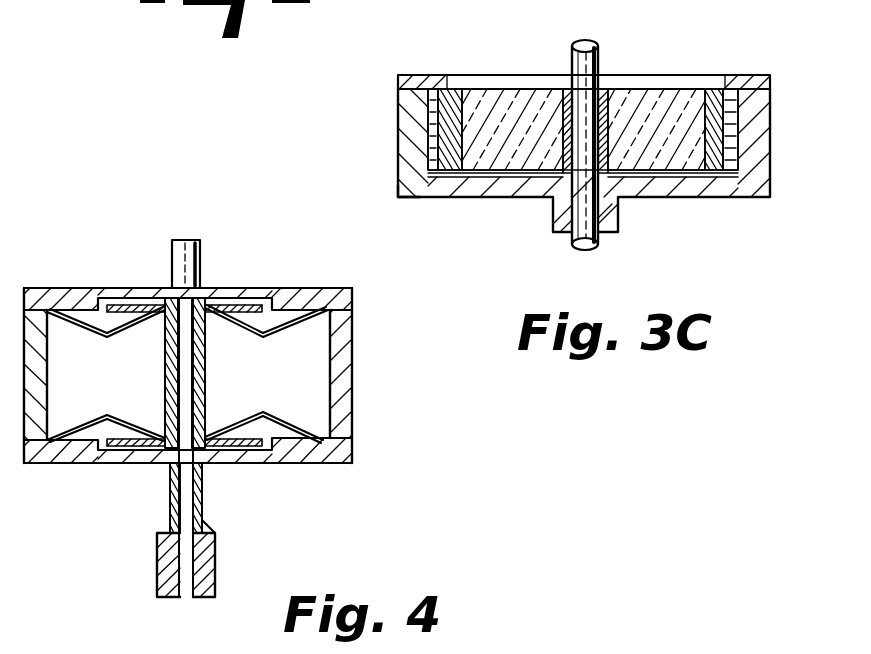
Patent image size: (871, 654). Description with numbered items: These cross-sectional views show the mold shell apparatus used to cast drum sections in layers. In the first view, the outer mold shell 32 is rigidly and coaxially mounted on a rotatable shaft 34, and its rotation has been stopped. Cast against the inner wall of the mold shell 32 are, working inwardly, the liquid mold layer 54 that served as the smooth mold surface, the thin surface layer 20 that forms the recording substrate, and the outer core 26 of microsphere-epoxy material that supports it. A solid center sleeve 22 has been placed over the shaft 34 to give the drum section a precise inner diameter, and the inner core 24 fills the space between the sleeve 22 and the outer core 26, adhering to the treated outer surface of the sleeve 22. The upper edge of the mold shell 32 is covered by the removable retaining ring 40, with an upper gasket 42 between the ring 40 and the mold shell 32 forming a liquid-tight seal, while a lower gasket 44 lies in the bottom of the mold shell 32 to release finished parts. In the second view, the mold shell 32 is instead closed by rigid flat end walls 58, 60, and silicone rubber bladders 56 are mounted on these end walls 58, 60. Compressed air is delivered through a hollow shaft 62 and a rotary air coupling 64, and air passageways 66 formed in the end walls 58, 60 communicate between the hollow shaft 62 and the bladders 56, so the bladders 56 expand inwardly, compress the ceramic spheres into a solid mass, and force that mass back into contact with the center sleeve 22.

In FIG. 3C, the surface layer 20 is at (727, 180).
In FIG. 4, the surface layer 20 is at (320, 390).
In FIG. 3C, the center sleeve 22 is at (568, 88).
In FIG. 4, the center sleeve 22 is at (165, 380).
In FIG. 3C, the inner core 24 is at (657, 155).
In FIG. 3C, the outer core 26 is at (713, 163).
In FIG. 3C, the mold shell 32 is at (762, 167).
In FIG. 3C, the shaft 34 is at (603, 48).
In FIG. 3C, the retaining ring 40 is at (757, 77).
In FIG. 3C, the upper gasket 42 is at (398, 89).
In FIG. 3C, the lower gasket 44 is at (398, 197).
In FIG. 3C, the liquid mold layer 54 is at (428, 158).
In FIG. 4, the bladders 56 is at (77, 317).
In FIG. 4, the flat end wall 58 is at (352, 308).
In FIG. 4, the flat end wall 60 is at (343, 452).
In FIG. 4, the hollow shaft 62 is at (207, 522).
In FIG. 4, the rotary air coupling 64 is at (160, 580).
In FIG. 4, the air passageways 66 is at (240, 303).